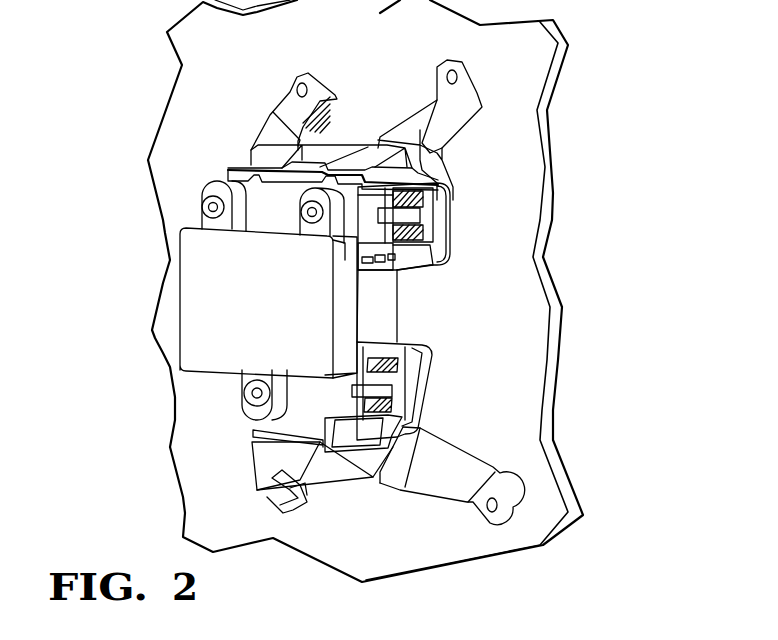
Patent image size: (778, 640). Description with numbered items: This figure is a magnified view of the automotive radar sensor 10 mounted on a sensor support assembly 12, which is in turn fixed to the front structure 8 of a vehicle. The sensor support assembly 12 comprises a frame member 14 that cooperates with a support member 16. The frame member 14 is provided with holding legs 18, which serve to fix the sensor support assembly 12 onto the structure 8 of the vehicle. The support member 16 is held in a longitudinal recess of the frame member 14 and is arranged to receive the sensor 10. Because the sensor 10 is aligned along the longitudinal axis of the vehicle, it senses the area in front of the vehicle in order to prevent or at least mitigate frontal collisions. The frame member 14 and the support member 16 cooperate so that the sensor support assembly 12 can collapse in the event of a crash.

The front structure 8 is at (205, 95).
The automotive radar sensor 10 is at (220, 318).
The sensor support assembly 12 is at (506, 317).
The frame member 14 is at (443, 203).
The support member 16 is at (403, 253).
The holding legs 18 is at (453, 127).